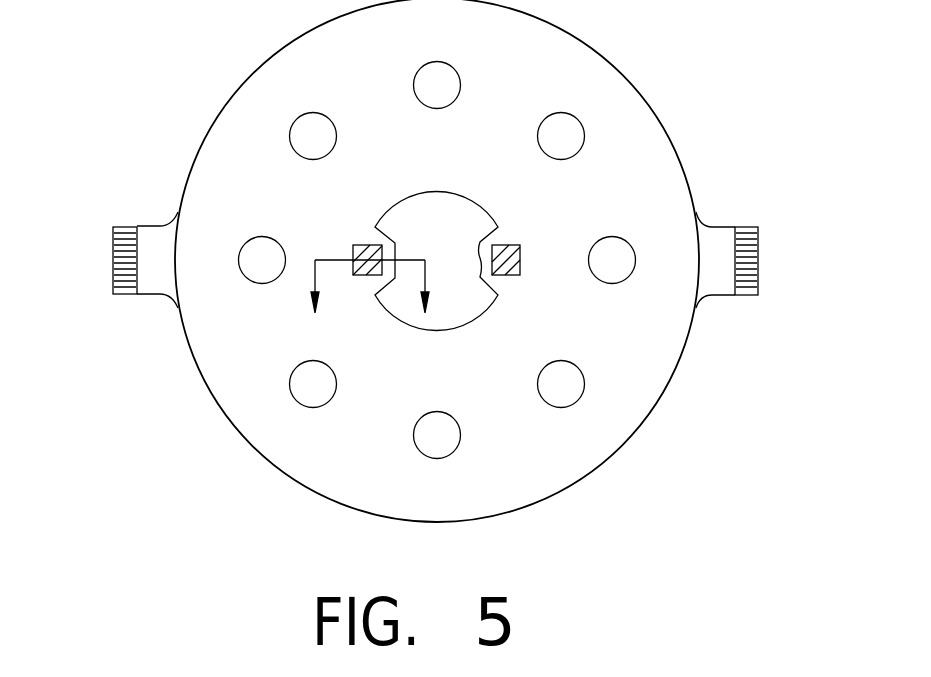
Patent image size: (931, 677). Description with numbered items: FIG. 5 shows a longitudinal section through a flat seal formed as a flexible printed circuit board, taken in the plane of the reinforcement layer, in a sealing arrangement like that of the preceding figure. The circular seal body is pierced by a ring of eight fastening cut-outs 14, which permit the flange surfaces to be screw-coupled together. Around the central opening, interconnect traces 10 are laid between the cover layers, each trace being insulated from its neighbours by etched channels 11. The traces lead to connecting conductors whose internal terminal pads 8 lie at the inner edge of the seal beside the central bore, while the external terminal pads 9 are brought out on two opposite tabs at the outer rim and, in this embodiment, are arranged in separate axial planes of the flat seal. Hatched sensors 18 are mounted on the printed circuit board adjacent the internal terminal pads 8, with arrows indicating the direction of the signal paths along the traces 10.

The internal terminal pads 8 is at (386, 281).
The external terminal pads 9 is at (127, 192).
The interconnect traces 10 is at (117, 288).
The etched channels 11 is at (116, 241).
The fastening cut-outs 14 is at (466, 72).
The sensor 18 is at (364, 247).